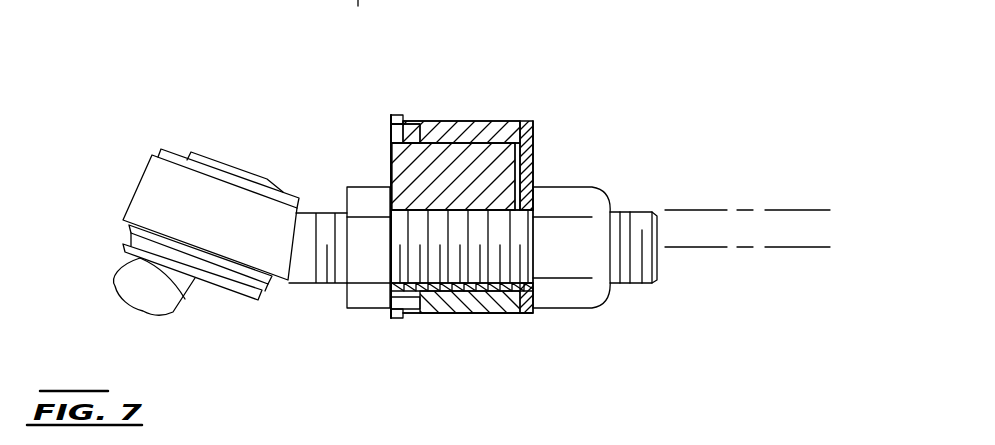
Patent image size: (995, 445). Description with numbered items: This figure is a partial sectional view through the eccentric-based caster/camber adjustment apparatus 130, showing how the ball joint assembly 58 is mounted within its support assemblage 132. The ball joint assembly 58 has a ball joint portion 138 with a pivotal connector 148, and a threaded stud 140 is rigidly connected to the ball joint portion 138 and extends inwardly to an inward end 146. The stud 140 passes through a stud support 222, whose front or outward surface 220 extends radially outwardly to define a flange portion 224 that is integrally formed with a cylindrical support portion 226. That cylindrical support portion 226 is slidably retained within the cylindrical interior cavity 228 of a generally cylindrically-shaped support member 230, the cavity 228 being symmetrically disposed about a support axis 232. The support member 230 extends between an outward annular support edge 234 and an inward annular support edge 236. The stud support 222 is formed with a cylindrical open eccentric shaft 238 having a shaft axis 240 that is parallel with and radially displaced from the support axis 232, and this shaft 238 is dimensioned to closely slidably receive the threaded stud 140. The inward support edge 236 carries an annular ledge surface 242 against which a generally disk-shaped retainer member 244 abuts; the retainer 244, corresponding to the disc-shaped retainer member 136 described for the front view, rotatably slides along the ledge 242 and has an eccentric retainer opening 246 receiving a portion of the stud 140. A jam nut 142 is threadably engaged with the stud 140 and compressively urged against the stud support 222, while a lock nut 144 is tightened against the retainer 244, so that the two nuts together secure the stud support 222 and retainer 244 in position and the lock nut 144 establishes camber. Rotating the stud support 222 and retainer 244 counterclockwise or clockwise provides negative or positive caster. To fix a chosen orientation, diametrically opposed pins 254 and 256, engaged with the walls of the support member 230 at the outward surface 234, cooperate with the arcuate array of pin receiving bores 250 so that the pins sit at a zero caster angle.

The ball joint assembly 58 is at (182, 131).
The ball joint portion 138 is at (118, 256).
The pivotal connector 148 is at (168, 307).
The threaded stud 140 is at (317, 285).
The jam nut 142 is at (365, 195).
The caster/camber adjustment apparatus 130 is at (576, 70).
The front surface 220 is at (390, 158).
The flange portion 224 is at (393, 115).
The outward annular support edge 234 is at (407, 115).
The pin 254 is at (390, 131).
The support assemblage 132 is at (484, 60).
The stud support 222 is at (470, 156).
The cylindrical support portion 226 is at (437, 153).
The inward annular support edge 236 is at (530, 125).
The disc-shaped retainer member 136 is at (533, 132).
The annular ledge surface 242 is at (520, 143).
The retainer member 244 is at (533, 166).
The cylindrical interior cavity 228 is at (473, 315).
The support member 230 is at (437, 315).
The eccentric shaft 238 is at (460, 312).
The retainer opening 246 is at (519, 314).
The array of pin receiving bores 250 is at (381, 312).
The pin 256 is at (409, 311).
The lock nut 144 is at (573, 200).
The inward end 146 is at (645, 215).
The support axis 232 is at (767, 210).
The shaft axis 240 is at (773, 247).